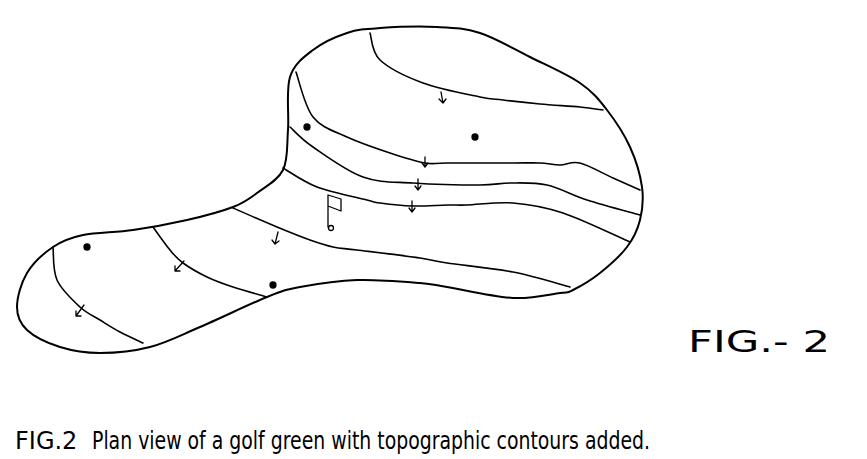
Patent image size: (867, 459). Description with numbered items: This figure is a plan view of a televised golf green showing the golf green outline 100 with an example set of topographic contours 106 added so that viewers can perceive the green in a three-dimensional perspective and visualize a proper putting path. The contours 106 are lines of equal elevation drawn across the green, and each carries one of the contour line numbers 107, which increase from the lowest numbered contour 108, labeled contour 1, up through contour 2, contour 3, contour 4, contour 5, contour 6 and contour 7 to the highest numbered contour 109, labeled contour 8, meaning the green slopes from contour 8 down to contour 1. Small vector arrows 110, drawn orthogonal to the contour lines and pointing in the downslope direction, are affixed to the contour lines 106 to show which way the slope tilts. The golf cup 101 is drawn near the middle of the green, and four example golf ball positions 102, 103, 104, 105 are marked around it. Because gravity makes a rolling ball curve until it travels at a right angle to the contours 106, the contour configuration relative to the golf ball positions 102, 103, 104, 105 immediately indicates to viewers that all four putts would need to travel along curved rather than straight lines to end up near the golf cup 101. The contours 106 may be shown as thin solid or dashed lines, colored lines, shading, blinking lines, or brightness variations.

The golf green outline 100 is at (590, 84).
The golf cup 101 is at (352, 214).
The golf ball position 102 is at (327, 134).
The golf ball position 103 is at (92, 259).
The golf ball position 104 is at (279, 298).
The golf ball position 105 is at (475, 149).
The topographic contours 106 is at (540, 100).
The contour line numbers 107 is at (458, 211).
The lowest numbered contour 108 is at (142, 336).
The highest numbered contour 109 is at (461, 32).
The vector arrows 110 is at (437, 100).
The contour 1 is at (104, 313).
The contour 2 is at (210, 262).
The contour 3 is at (401, 247).
The contour 4 is at (456, 205).
The contour 5 is at (495, 210).
The contour 6 is at (497, 210).
The contour 7 is at (486, 71).
The contour 8 is at (497, 53).